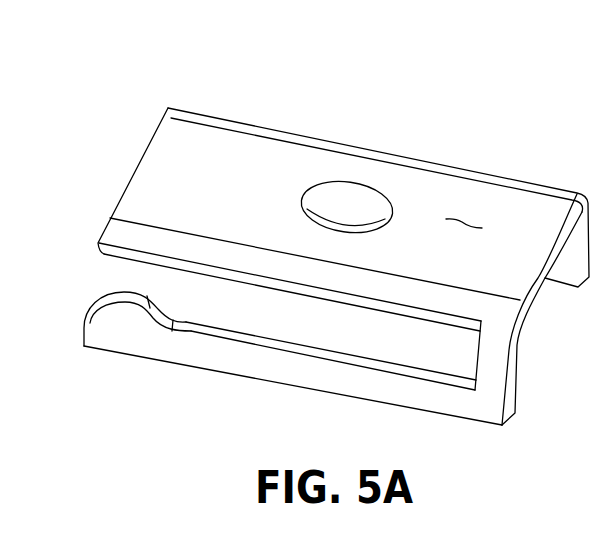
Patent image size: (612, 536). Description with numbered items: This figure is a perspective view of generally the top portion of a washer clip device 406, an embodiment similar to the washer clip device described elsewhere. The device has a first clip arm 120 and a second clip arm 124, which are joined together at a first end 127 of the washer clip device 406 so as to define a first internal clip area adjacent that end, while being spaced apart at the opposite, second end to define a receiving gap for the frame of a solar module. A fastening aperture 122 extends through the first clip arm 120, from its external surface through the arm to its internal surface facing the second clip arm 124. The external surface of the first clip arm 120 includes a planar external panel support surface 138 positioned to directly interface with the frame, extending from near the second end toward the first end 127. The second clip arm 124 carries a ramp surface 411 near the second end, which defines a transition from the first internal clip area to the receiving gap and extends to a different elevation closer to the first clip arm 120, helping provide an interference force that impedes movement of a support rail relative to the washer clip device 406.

The washer clip device 406 is at (314, 75).
The first clip arm 120 is at (87, 219).
The fastening aperture 122 is at (351, 171).
The planar external panel support surface 138 is at (462, 218).
The first end 127 is at (531, 374).
The second clip arm 124 is at (78, 322).
The ramp surface 411 is at (123, 316).